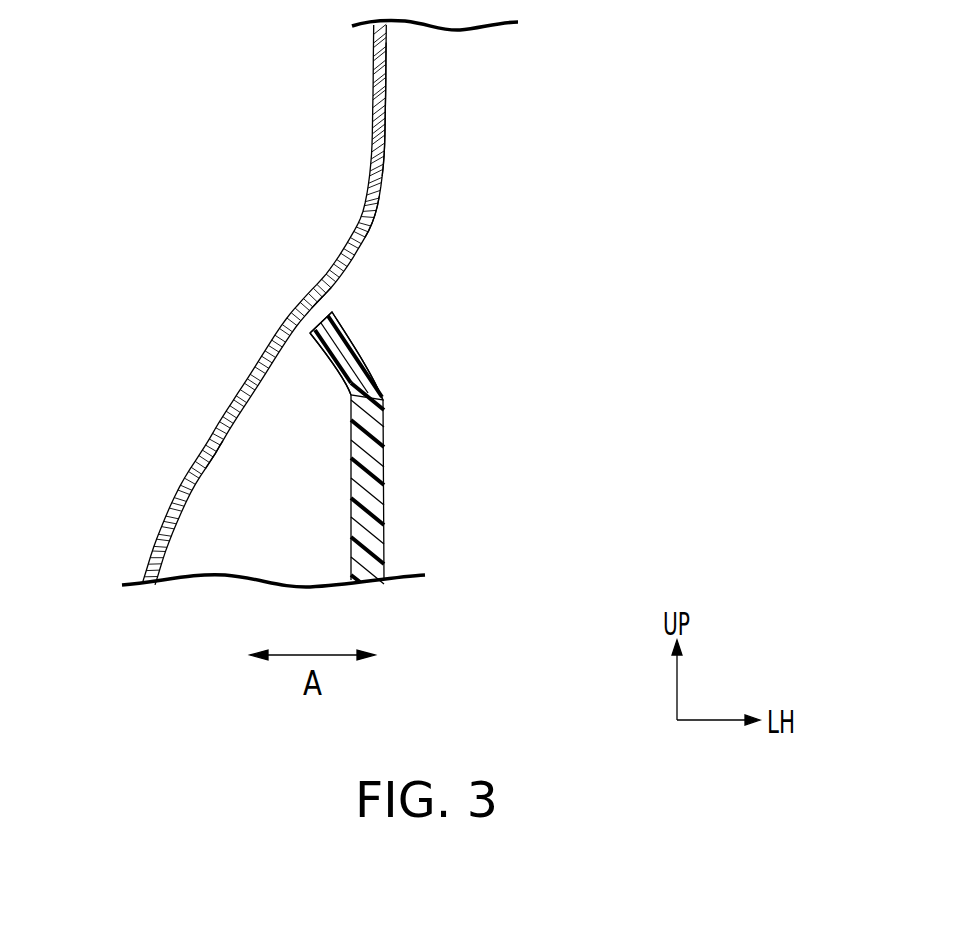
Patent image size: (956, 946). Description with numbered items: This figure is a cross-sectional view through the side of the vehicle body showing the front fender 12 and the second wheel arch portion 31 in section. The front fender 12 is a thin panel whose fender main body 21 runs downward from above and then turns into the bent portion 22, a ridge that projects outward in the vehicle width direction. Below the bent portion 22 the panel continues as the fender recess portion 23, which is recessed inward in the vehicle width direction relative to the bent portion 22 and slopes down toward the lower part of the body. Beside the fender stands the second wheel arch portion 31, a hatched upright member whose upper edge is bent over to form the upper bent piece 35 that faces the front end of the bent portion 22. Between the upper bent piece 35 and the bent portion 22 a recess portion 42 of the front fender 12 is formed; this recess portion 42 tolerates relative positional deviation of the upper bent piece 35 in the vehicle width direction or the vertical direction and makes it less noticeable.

The front fender 12 is at (408, 78).
The fender main body 21 is at (380, 153).
The bent portion 22 is at (375, 218).
The recess portion 42 is at (317, 298).
The fender recess portion 23 is at (215, 447).
The second wheel arch portion 31 is at (464, 448).
The upper bent piece 35 is at (368, 378).